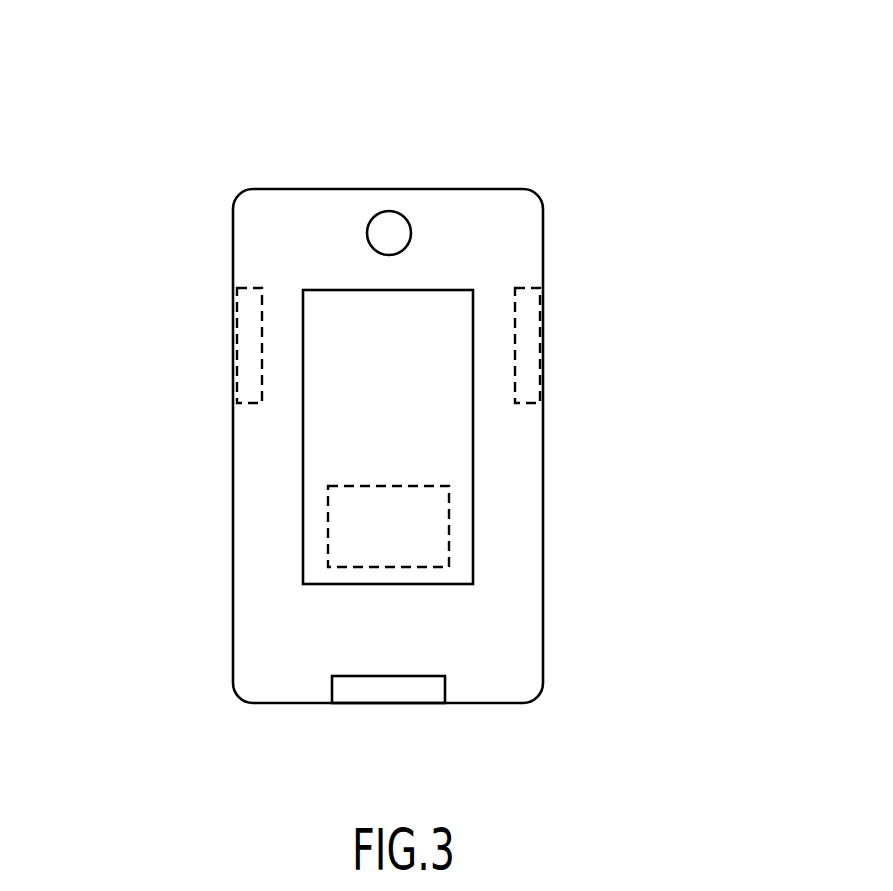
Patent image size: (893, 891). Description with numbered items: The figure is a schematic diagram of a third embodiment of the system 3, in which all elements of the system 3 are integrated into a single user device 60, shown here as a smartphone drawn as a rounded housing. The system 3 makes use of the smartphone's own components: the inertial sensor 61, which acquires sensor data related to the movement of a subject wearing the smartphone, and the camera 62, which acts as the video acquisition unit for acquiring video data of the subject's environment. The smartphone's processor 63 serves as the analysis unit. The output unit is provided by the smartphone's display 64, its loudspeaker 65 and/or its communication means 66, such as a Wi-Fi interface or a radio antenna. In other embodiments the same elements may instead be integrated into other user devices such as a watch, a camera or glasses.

The system 3 is at (658, 113).
The user device 60 is at (233, 244).
The inertial sensor 61 is at (240, 330).
The camera 62 is at (405, 218).
The processor 63 is at (449, 527).
The display 64 is at (465, 289).
The loudspeaker 65 is at (410, 696).
The communication means 66 is at (533, 328).